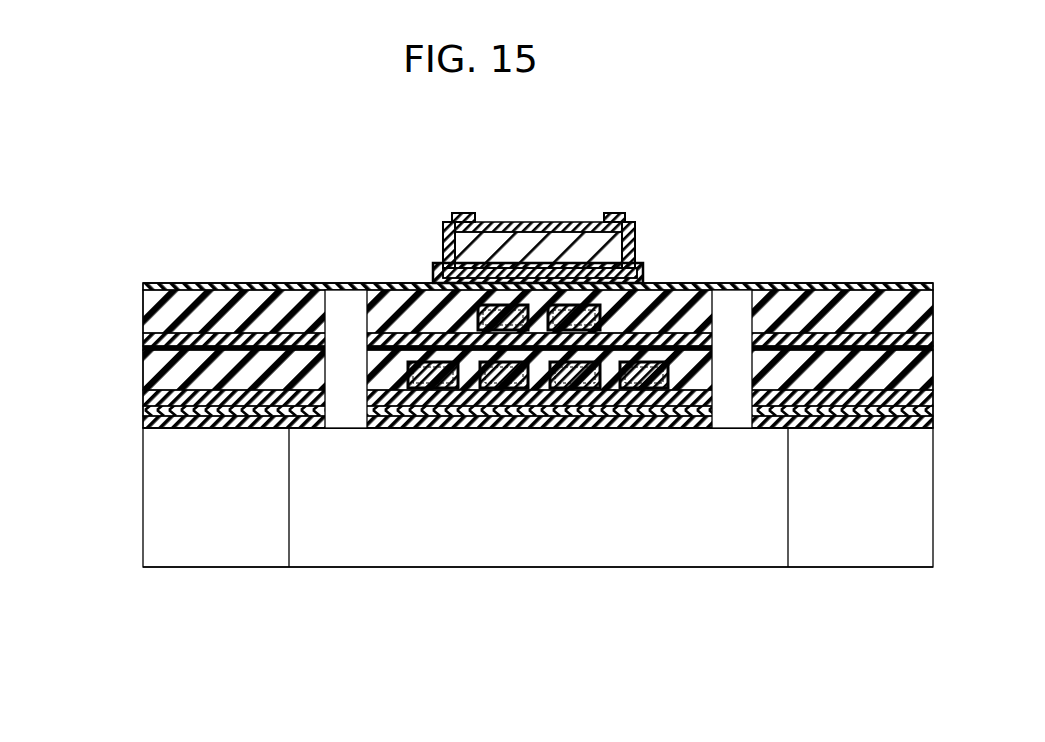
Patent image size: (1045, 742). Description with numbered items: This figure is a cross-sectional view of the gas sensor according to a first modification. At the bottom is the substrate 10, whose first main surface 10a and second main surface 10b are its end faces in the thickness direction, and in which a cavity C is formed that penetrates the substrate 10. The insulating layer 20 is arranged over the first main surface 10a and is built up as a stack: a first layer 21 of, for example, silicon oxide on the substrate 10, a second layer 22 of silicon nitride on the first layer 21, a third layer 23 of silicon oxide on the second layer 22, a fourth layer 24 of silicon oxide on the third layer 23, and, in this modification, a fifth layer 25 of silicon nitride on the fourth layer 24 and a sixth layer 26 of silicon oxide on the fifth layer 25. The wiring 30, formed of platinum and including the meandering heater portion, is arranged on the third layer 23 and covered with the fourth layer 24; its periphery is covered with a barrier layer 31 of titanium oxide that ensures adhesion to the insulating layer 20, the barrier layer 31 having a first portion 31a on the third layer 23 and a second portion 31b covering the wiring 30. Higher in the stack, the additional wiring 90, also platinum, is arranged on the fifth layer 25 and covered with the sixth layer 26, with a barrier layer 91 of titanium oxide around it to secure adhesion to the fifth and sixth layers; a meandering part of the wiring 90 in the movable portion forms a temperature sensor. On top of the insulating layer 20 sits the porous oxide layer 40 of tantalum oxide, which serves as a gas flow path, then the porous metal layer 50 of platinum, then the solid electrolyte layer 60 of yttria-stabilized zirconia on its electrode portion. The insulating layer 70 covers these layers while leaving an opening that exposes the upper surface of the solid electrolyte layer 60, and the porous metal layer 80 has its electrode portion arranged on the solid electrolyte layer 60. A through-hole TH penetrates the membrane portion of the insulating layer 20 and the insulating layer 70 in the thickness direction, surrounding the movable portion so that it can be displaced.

The substrate 10 is at (898, 556).
The first main surface 10a is at (835, 428).
The second main surface 10b is at (249, 567).
The cavity C is at (291, 497).
The insulating layer 20 is at (475, 374).
The first layer 21 is at (497, 445).
The second layer 22 is at (153, 414).
The third layer 23 is at (155, 405).
The fourth layer 24 is at (148, 362).
The fifth layer 25 is at (165, 335).
The sixth layer 26 is at (160, 297).
The wiring 30 is at (650, 388).
The barrier layer 31 is at (504, 536).
The first portion 31a is at (513, 428).
The second portion 31b is at (460, 428).
The porous oxide layer 40 is at (610, 282).
The porous metal layer 50 is at (573, 230).
The solid electrolyte layer 60 is at (447, 240).
The insulating layer 70 is at (258, 283).
The porous metal layer 80 is at (482, 222).
The wiring 90 is at (510, 305).
The barrier layer 91 is at (590, 320).
The through-hole TH is at (730, 290).